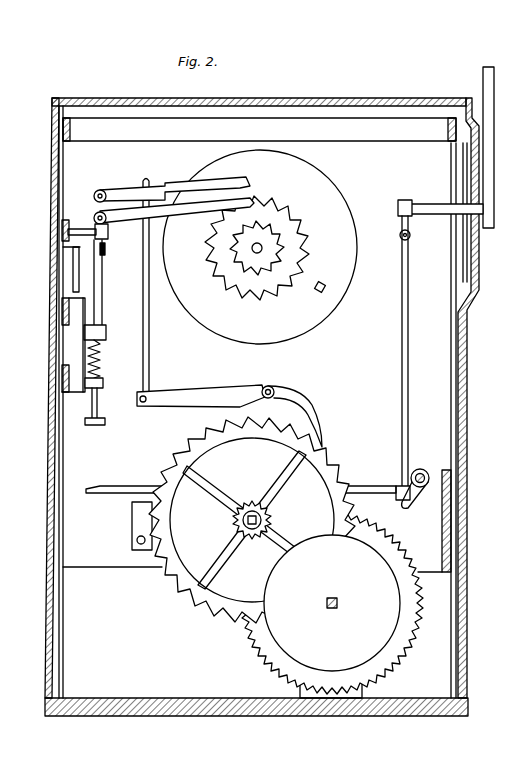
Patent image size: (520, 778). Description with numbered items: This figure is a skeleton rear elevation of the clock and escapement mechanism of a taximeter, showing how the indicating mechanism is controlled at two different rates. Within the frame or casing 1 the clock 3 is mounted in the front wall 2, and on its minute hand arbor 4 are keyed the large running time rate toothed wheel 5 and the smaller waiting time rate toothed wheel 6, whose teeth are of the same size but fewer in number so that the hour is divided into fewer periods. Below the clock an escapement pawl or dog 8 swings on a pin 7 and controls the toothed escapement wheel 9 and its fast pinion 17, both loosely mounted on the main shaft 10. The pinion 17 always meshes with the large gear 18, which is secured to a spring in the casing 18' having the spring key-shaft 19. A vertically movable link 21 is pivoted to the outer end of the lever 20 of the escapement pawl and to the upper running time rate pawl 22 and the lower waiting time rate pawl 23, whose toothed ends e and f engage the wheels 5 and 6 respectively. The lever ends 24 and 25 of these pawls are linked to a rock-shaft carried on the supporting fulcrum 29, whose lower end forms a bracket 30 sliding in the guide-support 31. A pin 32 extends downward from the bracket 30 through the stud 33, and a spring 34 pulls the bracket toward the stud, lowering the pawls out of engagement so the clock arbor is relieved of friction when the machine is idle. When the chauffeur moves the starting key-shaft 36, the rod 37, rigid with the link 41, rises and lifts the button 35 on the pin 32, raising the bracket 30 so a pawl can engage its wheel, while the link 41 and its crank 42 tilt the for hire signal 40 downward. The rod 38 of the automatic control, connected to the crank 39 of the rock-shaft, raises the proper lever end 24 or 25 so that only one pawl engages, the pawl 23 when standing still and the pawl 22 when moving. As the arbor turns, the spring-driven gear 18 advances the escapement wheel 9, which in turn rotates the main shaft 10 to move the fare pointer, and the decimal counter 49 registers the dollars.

The frame or casing 1 is at (262, 407).
The front wall 2 is at (263, 402).
The clock 3 is at (336, 203).
The minute hand arbor 4 is at (257, 248).
The running time rate toothed wheel 5 is at (304, 243).
The waiting time rate toothed wheel 6 is at (263, 248).
The pin 7 is at (273, 389).
The escapement pawl or dog 8 is at (305, 400).
The escapement wheel 9 is at (330, 456).
The main shaft 10 is at (258, 521).
The pinion 17 is at (253, 508).
The gear 18 is at (332, 603).
The casing 18' is at (332, 603).
The spring key-shaft 19 is at (338, 609).
The lever 20 is at (178, 398).
The link 21 is at (149, 328).
The running time rate pawl 22 is at (167, 184).
The waiting time rate pawl 23 is at (186, 206).
The lever end 24 is at (104, 190).
The lever end 25 is at (108, 236).
The supporting fulcrum 29 is at (102, 272).
The bracket 30 is at (106, 333).
The guide-support 31 is at (69, 348).
The pin 32 is at (98, 403).
The stud 33 is at (103, 381).
The spring 34 is at (101, 355).
The button 35 is at (106, 422).
The starting key-shaft 36 is at (419, 468).
The rod 37 is at (118, 486).
The rod 38 is at (73, 263).
The crank 39 is at (63, 236).
The for hire signal 40 is at (494, 178).
The link 41 is at (409, 338).
The crank 42 is at (410, 235).
The decimal counter 49 is at (132, 520).
The toothed end e is at (250, 191).
The toothed end f is at (258, 206).